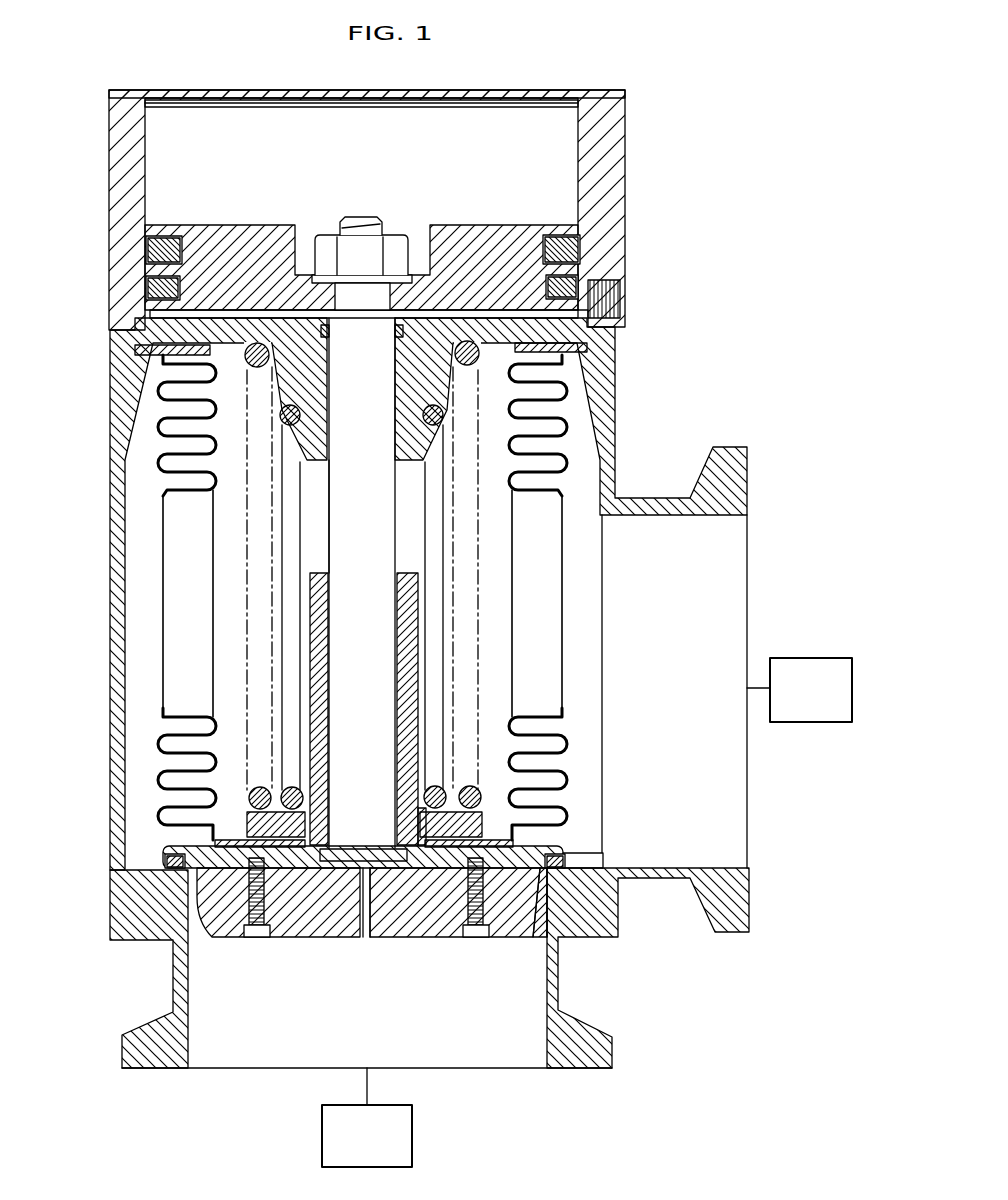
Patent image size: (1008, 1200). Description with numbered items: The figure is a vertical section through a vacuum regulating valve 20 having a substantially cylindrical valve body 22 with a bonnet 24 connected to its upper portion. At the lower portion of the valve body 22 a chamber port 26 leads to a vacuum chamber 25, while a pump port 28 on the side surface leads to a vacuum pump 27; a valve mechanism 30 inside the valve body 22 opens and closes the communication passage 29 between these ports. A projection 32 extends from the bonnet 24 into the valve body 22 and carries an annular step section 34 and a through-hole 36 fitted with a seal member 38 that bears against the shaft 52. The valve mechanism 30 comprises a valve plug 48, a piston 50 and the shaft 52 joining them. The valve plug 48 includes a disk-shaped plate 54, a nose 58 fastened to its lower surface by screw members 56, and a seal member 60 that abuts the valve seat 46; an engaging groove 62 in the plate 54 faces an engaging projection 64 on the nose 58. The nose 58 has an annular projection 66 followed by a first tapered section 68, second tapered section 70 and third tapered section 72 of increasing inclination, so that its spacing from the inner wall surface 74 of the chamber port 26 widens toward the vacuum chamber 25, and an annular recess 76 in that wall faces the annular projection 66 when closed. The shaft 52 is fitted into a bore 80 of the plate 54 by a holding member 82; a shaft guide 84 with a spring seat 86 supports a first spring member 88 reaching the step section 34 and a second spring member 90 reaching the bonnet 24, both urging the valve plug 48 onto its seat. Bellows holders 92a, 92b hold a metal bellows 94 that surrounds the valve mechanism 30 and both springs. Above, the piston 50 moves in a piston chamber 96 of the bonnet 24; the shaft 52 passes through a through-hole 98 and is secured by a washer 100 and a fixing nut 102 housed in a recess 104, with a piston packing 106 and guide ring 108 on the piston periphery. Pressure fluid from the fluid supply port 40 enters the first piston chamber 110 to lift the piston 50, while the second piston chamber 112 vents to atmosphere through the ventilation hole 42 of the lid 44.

The vacuum regulating valve 20 is at (662, 50).
The valve body 22 is at (618, 395).
The bonnet 24 is at (600, 186).
The vacuum chamber 25 is at (412, 1122).
The chamber port 26 is at (280, 1052).
The vacuum pump 27 is at (810, 658).
The pump port 28 is at (660, 565).
The communication passage 29 is at (590, 677).
The valve mechanism 30 is at (500, 663).
The projection 32 is at (292, 388).
The step section 34 is at (445, 418).
The through-hole 36 is at (392, 396).
The seal member 38 is at (330, 332).
The fluid supply port 40 is at (620, 302).
The ventilation hole 42 is at (378, 96).
The lid 44 is at (510, 95).
The valve seat 46 is at (575, 855).
The valve plug 48 is at (330, 942).
The piston 50 is at (240, 230).
The shaft 52 is at (345, 546).
The disk-shaped plate 54 is at (520, 845).
The screw members 56 is at (258, 940).
The nose 58 is at (405, 937).
The seal member 60 is at (165, 862).
The engaging groove 62 is at (250, 840).
The engaging projection 64 is at (500, 937).
The annular projection 66 is at (190, 905).
The first tapered section 68 is at (560, 900).
The second tapered section 70 is at (560, 945).
The third tapered section 72 is at (530, 937).
The inner wall surface 74 is at (197, 945).
The annular recess 76 is at (195, 850).
The bore 80 is at (388, 855).
The holding member 82 is at (420, 830).
The shaft guide 84 is at (400, 580).
The spring seat 86 is at (270, 790).
The first spring member 88 is at (447, 428).
The second spring member 90 is at (480, 355).
The bellows holder 92a is at (497, 840).
The bellows holder 92b is at (145, 350).
The bellows 94 is at (565, 718).
The piston chamber 96 is at (226, 150).
The through-hole 98 is at (390, 300).
The washer 100 is at (412, 285).
The fixing nut 102 is at (362, 250).
The recess 104 is at (300, 250).
The piston packing 106 is at (150, 250).
The guide ring 108 is at (150, 290).
The first piston chamber 110 is at (160, 313).
The second piston chamber 112 is at (535, 135).